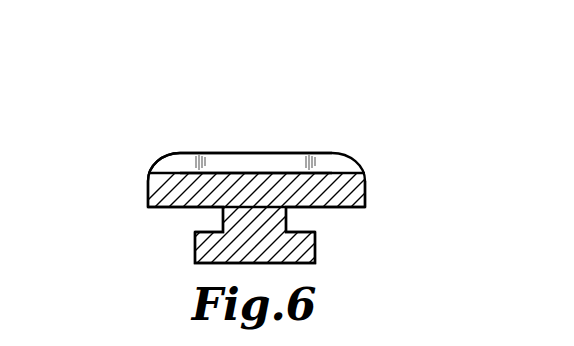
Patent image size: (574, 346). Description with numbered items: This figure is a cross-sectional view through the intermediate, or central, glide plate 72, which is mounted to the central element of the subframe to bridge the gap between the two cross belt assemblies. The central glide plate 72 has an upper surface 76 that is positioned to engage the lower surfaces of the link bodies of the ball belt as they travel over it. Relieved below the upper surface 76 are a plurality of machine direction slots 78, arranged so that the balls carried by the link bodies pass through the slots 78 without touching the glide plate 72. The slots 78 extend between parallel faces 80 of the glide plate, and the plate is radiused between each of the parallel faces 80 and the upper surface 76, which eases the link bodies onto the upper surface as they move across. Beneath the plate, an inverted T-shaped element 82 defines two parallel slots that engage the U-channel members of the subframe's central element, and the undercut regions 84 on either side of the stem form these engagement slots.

The central glide plate 72 is at (290, 148).
The upper surface 76 is at (220, 156).
The machine direction slots 78 is at (253, 173).
The parallel faces 80 is at (147, 192).
The inverted T-shaped element 82 is at (315, 250).
The notch 84 is at (210, 232).